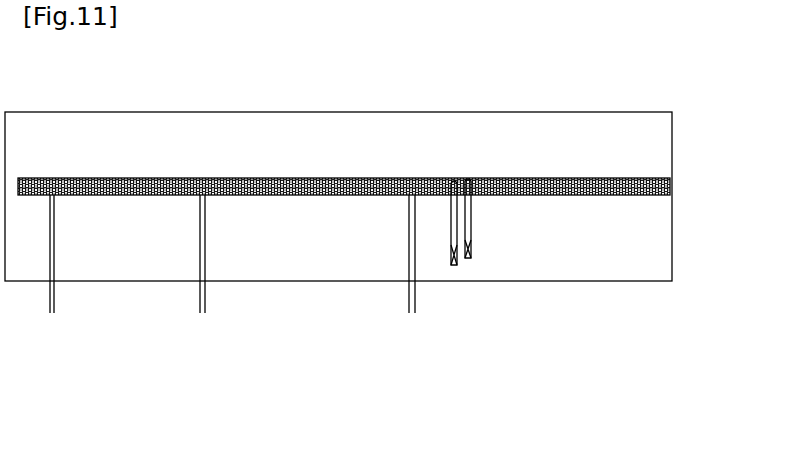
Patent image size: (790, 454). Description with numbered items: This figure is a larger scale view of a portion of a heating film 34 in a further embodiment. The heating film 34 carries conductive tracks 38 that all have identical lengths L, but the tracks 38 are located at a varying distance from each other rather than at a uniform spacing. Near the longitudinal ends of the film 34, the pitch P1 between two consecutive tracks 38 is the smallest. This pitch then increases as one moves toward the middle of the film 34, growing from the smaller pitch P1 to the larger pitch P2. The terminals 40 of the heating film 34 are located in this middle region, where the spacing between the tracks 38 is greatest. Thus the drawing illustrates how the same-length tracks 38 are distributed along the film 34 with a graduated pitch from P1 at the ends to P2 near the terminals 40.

The heating film 34 is at (648, 133).
The track 38 is at (60, 193).
The terminal 40 is at (469, 258).
The pitch P1 is at (78, 313).
The length L is at (178, 313).
The pitch P2 is at (443, 313).